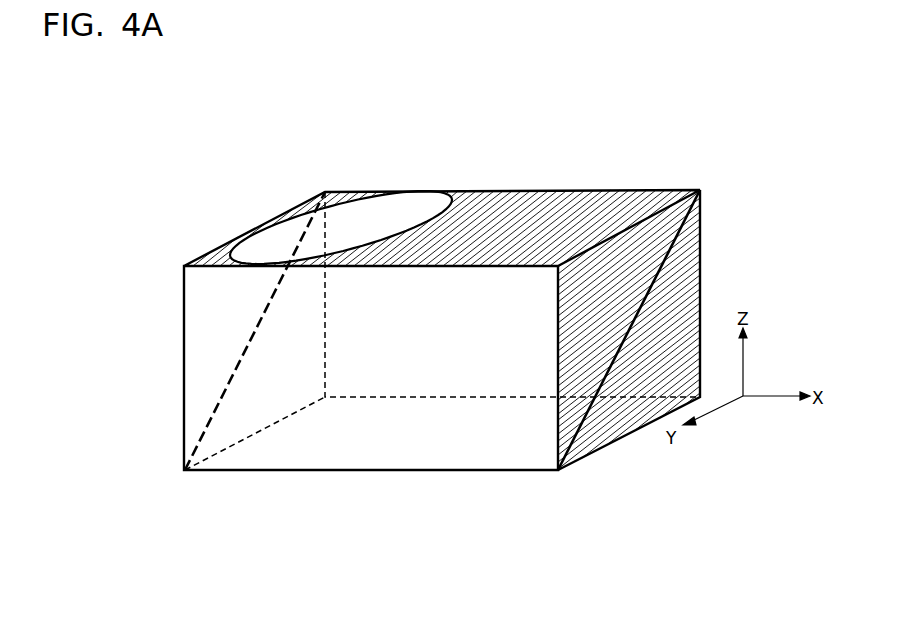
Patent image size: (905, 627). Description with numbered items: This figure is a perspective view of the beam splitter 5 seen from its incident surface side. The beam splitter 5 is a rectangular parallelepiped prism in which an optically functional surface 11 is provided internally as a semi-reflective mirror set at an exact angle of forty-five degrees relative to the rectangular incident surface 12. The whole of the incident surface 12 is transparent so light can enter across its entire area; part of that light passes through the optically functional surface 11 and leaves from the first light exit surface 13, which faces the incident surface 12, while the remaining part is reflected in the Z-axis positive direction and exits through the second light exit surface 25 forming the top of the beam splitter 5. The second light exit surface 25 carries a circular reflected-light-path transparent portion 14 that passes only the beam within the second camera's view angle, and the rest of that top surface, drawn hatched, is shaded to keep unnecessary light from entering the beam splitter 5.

The beam splitter 5 is at (253, 206).
The optically functional surface 11 is at (293, 365).
The incident surface 12 is at (352, 430).
The first light exit surface 13 is at (418, 284).
The reflected-light-path transparent portion 14 is at (381, 210).
The second light exit surface 25 is at (575, 212).